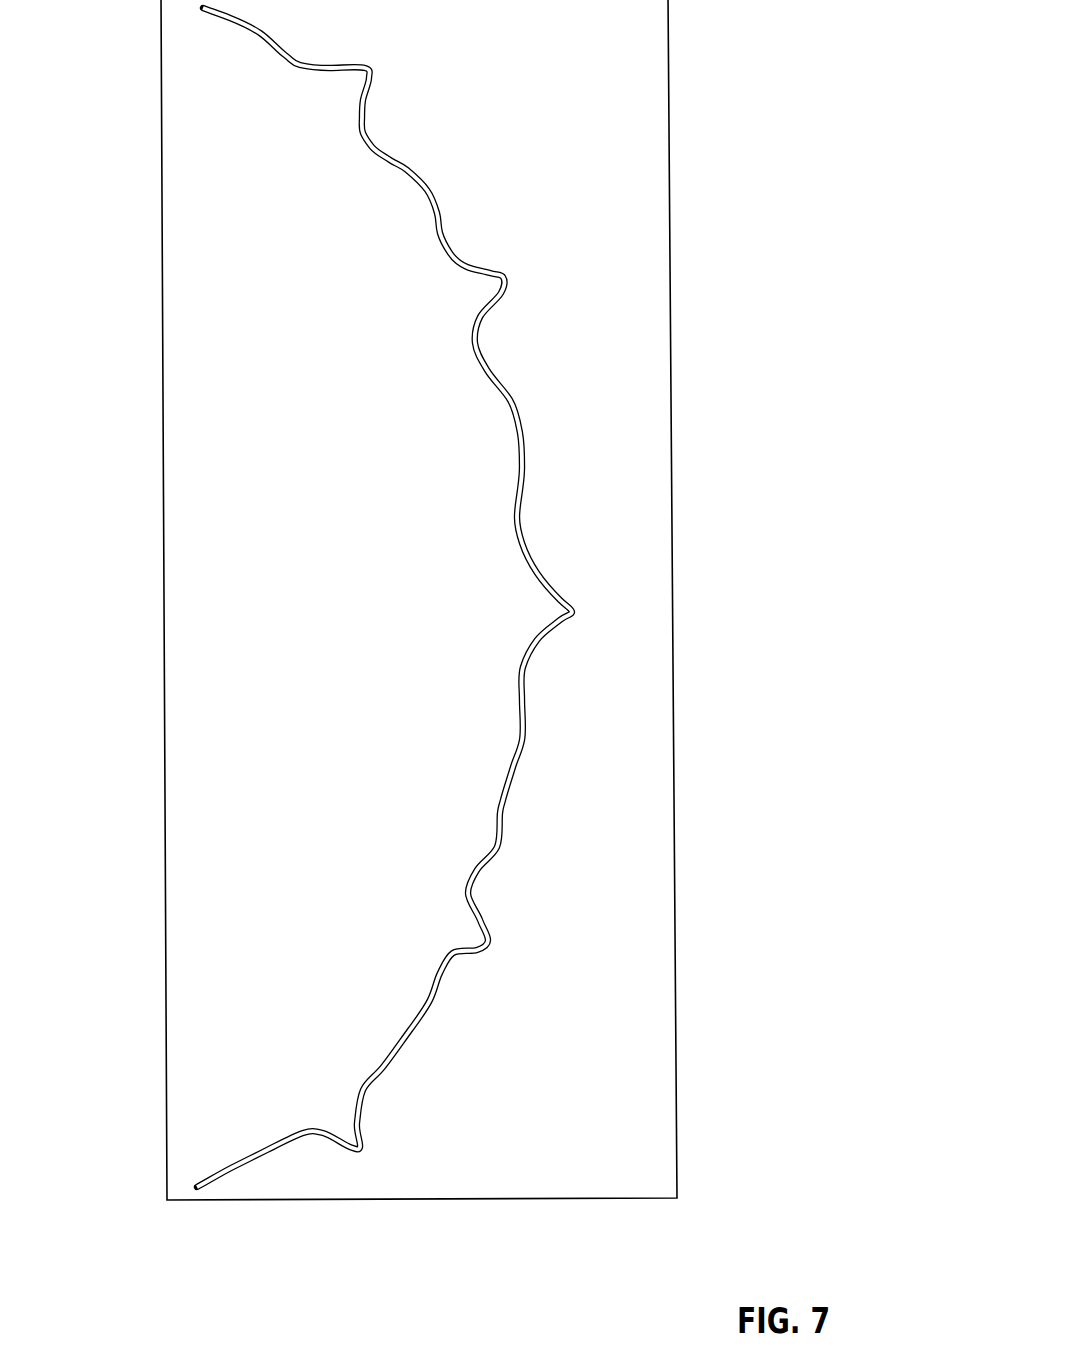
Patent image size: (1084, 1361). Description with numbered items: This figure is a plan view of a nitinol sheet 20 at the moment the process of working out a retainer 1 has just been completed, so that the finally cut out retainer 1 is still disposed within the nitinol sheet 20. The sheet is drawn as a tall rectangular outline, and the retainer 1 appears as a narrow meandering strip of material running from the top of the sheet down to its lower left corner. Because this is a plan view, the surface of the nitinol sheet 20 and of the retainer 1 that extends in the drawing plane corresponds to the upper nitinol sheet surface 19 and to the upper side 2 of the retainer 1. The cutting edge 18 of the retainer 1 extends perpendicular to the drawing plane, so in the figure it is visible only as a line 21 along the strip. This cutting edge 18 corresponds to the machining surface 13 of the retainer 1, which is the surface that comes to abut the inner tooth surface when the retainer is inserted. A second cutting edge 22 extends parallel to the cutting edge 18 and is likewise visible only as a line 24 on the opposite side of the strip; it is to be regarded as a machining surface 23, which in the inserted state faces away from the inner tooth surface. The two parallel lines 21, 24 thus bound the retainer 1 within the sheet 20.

The retainer 1 is at (462, 204).
The upper side of the retainer 2 is at (517, 427).
The machining surface 13 is at (567, 562).
The cutting edge 18 is at (660, 513).
The line 21 is at (523, 543).
The upper nitinol sheet surface 19 is at (627, 790).
The nitinol sheet 20 is at (700, 915).
The cutting edge 22 is at (278, 497).
The machining surface 23 is at (457, 360).
The line 24 is at (517, 491).